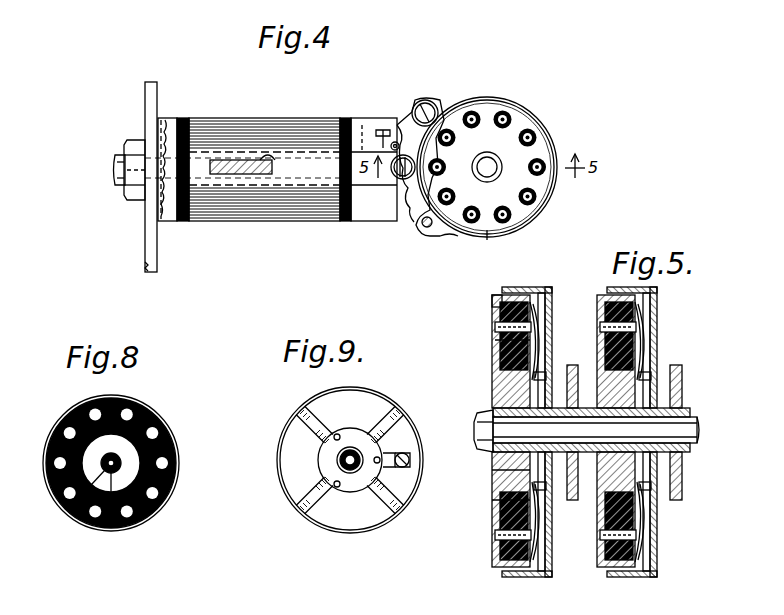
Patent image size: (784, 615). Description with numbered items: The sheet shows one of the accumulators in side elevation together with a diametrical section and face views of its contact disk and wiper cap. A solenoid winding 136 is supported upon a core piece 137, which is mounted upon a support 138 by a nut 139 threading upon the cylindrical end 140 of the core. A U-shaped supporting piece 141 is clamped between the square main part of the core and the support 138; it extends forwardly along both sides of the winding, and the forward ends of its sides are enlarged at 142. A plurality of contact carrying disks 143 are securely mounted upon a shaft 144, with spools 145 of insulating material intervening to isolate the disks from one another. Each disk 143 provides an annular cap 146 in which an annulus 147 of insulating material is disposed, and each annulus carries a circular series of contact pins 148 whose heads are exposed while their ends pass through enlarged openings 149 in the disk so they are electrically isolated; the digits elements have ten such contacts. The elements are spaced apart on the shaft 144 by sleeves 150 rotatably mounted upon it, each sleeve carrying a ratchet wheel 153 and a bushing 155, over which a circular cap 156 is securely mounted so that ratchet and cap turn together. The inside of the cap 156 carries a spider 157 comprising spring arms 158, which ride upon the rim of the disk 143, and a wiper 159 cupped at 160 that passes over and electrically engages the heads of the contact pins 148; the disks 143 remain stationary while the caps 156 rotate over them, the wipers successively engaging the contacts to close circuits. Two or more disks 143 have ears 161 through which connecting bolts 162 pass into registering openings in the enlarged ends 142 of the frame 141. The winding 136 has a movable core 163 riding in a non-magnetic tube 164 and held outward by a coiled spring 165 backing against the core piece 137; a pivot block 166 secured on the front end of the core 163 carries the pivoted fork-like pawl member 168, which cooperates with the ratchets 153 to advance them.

In FIG. 4, the solenoid winding 136 is at (247, 128).
In FIG. 4, the core piece 137 is at (171, 222).
In FIG. 4, the support 138 is at (146, 262).
In FIG. 4, the nut 139 is at (137, 198).
In FIG. 4, the cylindrical end 140 is at (116, 178).
In FIG. 4, the U-shaped supporting piece 141 is at (193, 118).
In FIG. 4, the enlarged ends 142 is at (413, 124).
In FIG. 4, the contact carrying disk 143 is at (536, 149).
In FIG. 8, the contact carrying disk 143 is at (112, 528).
In FIG. 5, the contact carrying disk 143 is at (492, 387).
In FIG. 4, the shaft 144 is at (500, 152).
In FIG. 5, the shaft 144 is at (505, 430).
In FIG. 8, the spool 145 is at (66, 518).
In FIG. 9, the spool 145 is at (350, 460).
In FIG. 5, the spool 145 is at (502, 472).
In FIG. 4, the annular cap 146 is at (487, 238).
In FIG. 8, the annular cap 146 is at (165, 503).
In FIG. 5, the annular cap 146 is at (492, 304).
In FIG. 8, the annulus 147 is at (176, 469).
In FIG. 5, the annulus 147 is at (500, 356).
In FIG. 4, the contact pin 148 is at (533, 200).
In FIG. 8, the contact pin 148 is at (155, 431).
In FIG. 5, the contact pin 148 is at (495, 328).
In FIG. 4, the enlarged opening 149 is at (487, 167).
In FIG. 5, the enlarged opening 149 is at (492, 342).
In FIG. 5, the sleeve 150 is at (560, 408).
In FIG. 5, the ratchet wheel 153 is at (625, 497).
In FIG. 5, the bushing 155 is at (676, 398).
In FIG. 4, the circular cap 156 is at (527, 227).
In FIG. 9, the circular cap 156 is at (282, 485).
In FIG. 5, the circular cap 156 is at (552, 300).
In FIG. 9, the spider 157 is at (355, 490).
In FIG. 5, the spider 157 is at (502, 505).
In FIG. 9, the spring arm 158 is at (303, 424).
In FIG. 5, the spring arm 158 is at (548, 535).
In FIG. 9, the wiper 159 is at (408, 470).
In FIG. 9, the cupped portion 160 is at (406, 453).
In FIG. 4, the ear 161 is at (427, 236).
In FIG. 4, the connecting bolt 162 is at (428, 101).
In FIG. 4, the movable core 163 is at (362, 128).
In FIG. 4, the non-magnetic tube 164 is at (268, 175).
In FIG. 4, the coiled spring 165 is at (236, 175).
In FIG. 4, the pivot block 166 is at (383, 128).
In FIG. 4, the pawl member 168 is at (445, 120).